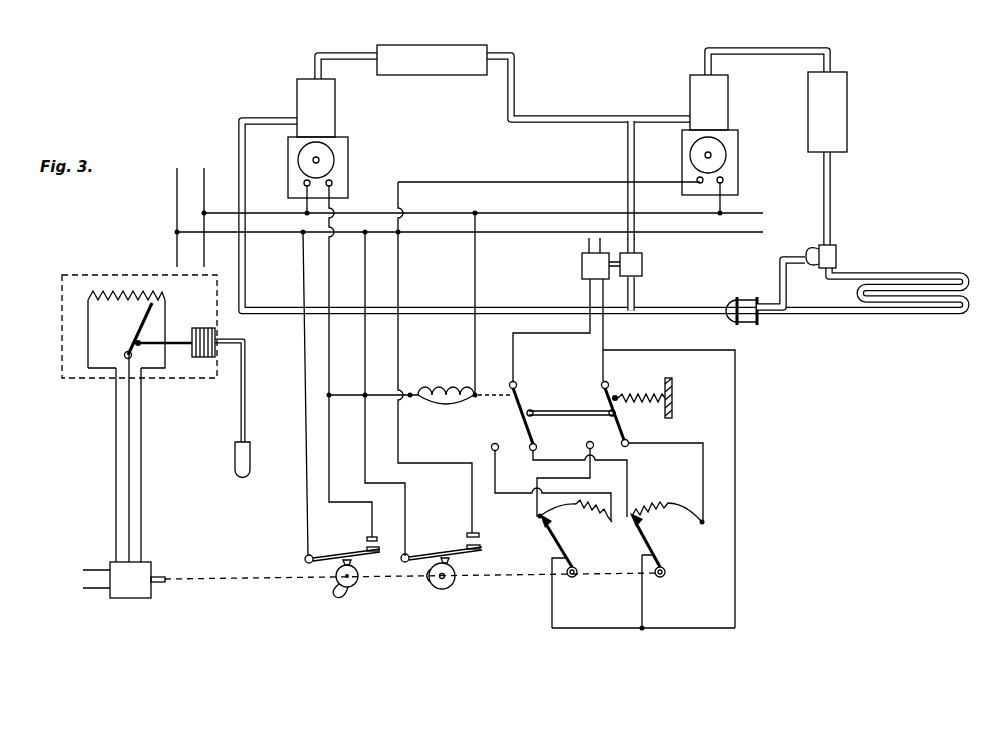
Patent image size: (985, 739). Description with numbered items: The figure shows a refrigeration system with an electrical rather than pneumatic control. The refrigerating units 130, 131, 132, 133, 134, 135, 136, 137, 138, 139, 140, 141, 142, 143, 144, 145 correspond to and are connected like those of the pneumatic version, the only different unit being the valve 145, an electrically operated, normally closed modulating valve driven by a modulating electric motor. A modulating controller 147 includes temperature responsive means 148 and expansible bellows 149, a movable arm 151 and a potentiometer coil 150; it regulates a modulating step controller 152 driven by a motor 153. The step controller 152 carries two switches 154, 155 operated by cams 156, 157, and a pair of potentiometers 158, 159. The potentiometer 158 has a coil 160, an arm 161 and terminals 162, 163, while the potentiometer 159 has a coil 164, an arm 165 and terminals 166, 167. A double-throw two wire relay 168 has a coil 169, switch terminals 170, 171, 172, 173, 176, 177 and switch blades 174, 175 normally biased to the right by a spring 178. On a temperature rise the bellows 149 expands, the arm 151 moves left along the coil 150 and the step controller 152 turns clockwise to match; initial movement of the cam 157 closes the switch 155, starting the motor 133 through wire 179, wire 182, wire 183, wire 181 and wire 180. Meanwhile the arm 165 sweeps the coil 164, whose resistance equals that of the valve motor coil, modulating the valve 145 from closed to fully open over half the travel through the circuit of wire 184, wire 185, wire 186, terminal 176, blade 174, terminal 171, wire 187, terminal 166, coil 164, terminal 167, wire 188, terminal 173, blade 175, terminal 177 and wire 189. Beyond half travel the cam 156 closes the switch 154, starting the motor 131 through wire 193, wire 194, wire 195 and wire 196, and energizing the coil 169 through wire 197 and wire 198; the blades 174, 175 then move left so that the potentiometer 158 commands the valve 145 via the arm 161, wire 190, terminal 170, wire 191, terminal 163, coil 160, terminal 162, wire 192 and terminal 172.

The refrigerating unit 130 is at (326, 107).
The motor 131 is at (331, 153).
The refrigerating unit 132 is at (715, 105).
The motor 133 is at (721, 153).
The refrigerating unit 134 is at (786, 49).
The refrigerating unit 135 is at (834, 117).
The refrigerating unit 136 is at (831, 187).
The refrigerating unit 137 is at (837, 253).
The refrigerating unit 138 is at (916, 272).
The refrigerating unit 139 is at (804, 318).
The refrigerating unit 140 is at (349, 48).
The refrigerating unit 141 is at (444, 53).
The refrigerating unit 142 is at (581, 115).
The refrigerating unit 143 is at (621, 168).
The refrigerating unit 144 is at (637, 244).
The electrically operated modulating valve 145 is at (643, 266).
The modulating controller 147 is at (152, 275).
The temperature responsive means 148 is at (251, 458).
The expansible bellows 149 is at (200, 327).
The potentiometer coil 150 is at (106, 290).
The movable arm 151 is at (138, 324).
The modulating step controller 152 is at (256, 585).
The motor 153 is at (137, 592).
The switch 154 is at (354, 549).
The switch 155 is at (448, 547).
The cam 156 is at (352, 585).
The cam 157 is at (449, 587).
The potentiometer 158 is at (549, 546).
The potentiometer 159 is at (672, 542).
The coil 160 is at (592, 503).
The arm 161 is at (566, 550).
The terminal 162 is at (539, 519).
The terminal 163 is at (608, 522).
The coil 164 is at (668, 506).
The arm 165 is at (679, 530).
The terminal 166 is at (634, 522).
The terminal 167 is at (703, 525).
The double-throw two wire relay 168 is at (503, 425).
The relay coil 169 is at (428, 392).
The switch terminal 170 is at (491, 446).
The switch terminal 171 is at (537, 449).
The switch terminal 172 is at (590, 441).
The switch terminal 173 is at (629, 443).
The switch blade 174 is at (521, 406).
The switch blade 175 is at (605, 400).
The switch terminal 176 is at (515, 384).
The switch terminal 177 is at (609, 383).
The spring 178 is at (645, 396).
The wire 179 is at (511, 234).
The wire 180 is at (535, 211).
The wire 181 is at (724, 203).
The wire 182 is at (365, 424).
The wire 183 is at (400, 354).
The wire 184 is at (644, 603).
The wire 185 is at (715, 629).
The wire 186 is at (584, 292).
The wire 187 is at (628, 473).
The wire 188 is at (703, 476).
The wire 189 is at (606, 335).
The wire 190 is at (622, 629).
The wire 191 is at (508, 495).
The wire 192 is at (550, 478).
The wire 193 is at (303, 371).
The wire 194 is at (332, 483).
The wire 195 is at (332, 283).
The wire 196 is at (305, 190).
The wire 197 is at (347, 394).
The wire 198 is at (474, 270).